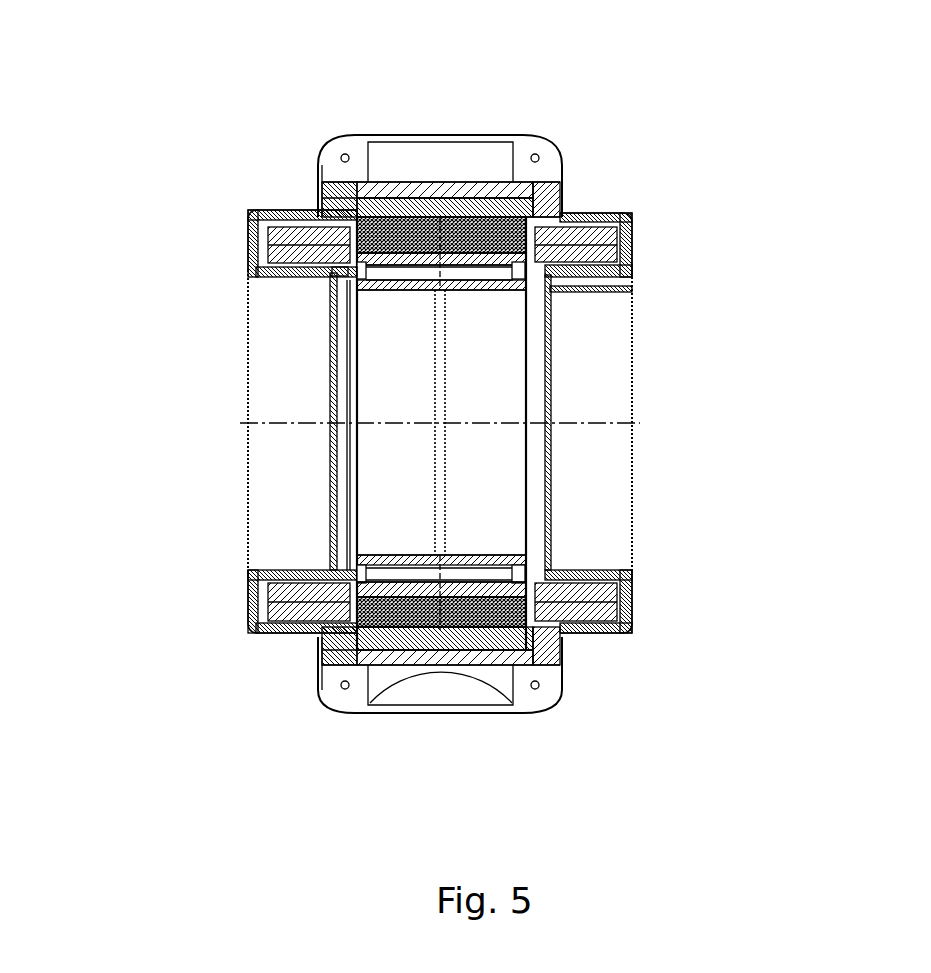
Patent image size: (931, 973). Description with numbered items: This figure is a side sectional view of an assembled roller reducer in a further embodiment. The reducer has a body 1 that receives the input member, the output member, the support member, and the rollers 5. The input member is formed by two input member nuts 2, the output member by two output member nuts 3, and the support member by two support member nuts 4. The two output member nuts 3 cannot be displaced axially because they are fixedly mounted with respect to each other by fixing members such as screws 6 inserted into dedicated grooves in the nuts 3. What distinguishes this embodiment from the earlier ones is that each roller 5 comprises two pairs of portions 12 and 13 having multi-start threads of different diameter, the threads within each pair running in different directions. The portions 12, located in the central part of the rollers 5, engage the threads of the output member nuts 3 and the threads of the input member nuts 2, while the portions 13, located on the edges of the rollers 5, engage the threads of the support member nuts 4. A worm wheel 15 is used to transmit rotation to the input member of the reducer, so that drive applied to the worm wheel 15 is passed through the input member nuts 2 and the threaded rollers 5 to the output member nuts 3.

The body 1 is at (305, 203).
The input member nuts 2 is at (520, 195).
The output member nuts 3 is at (550, 290).
The support member nuts 4 is at (605, 215).
The rollers 5 is at (565, 178).
The screws 6 is at (345, 280).
The portions 12 is at (475, 612).
The portions 13 is at (283, 607).
The worm wheel 15 is at (490, 673).